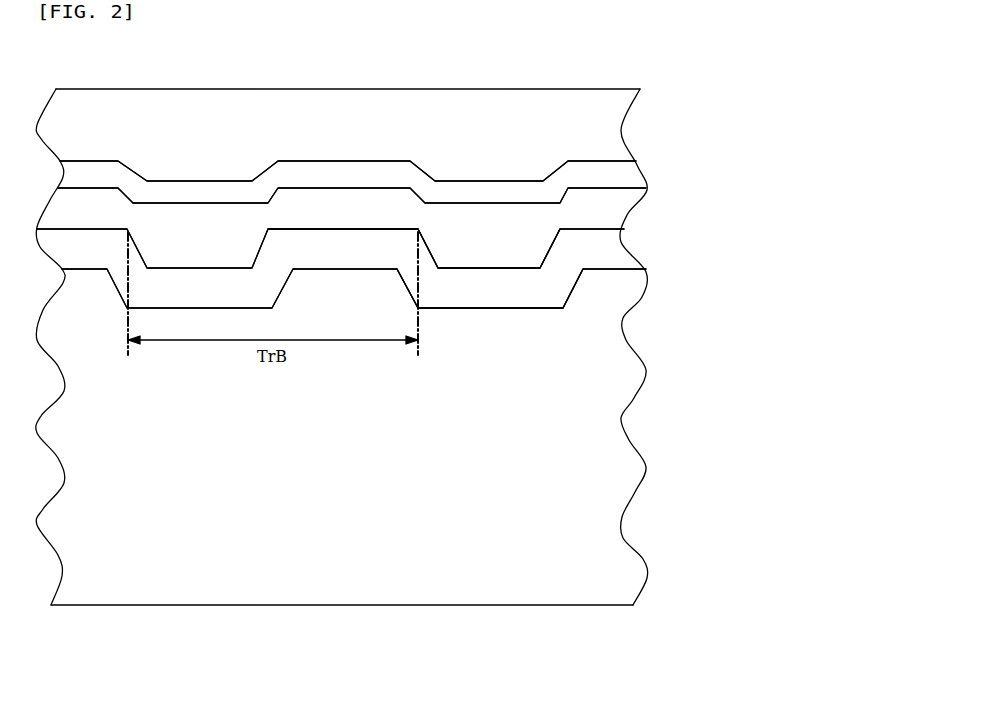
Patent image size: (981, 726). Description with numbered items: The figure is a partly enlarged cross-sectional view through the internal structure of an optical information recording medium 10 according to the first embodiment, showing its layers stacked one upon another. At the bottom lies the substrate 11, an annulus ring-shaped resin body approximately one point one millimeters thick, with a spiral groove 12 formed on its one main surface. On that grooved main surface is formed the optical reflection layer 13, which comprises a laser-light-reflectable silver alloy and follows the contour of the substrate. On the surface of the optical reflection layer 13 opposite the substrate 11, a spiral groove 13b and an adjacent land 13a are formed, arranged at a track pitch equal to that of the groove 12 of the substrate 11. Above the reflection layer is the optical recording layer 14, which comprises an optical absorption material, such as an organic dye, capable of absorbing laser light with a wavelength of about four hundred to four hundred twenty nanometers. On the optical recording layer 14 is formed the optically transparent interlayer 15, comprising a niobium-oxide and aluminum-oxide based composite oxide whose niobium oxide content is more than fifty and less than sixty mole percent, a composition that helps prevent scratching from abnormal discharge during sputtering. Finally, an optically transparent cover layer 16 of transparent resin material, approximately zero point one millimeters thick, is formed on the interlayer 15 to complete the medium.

The optical information recording medium 10 is at (393, 327).
The cover layer 16 is at (620, 130).
The interlayer 15 is at (623, 172).
The optical recording layer 14 is at (610, 205).
The optical reflection layer 13 is at (613, 247).
The groove 13b is at (521, 269).
The land 13a is at (382, 226).
The groove 12 is at (452, 311).
The substrate 11 is at (583, 422).